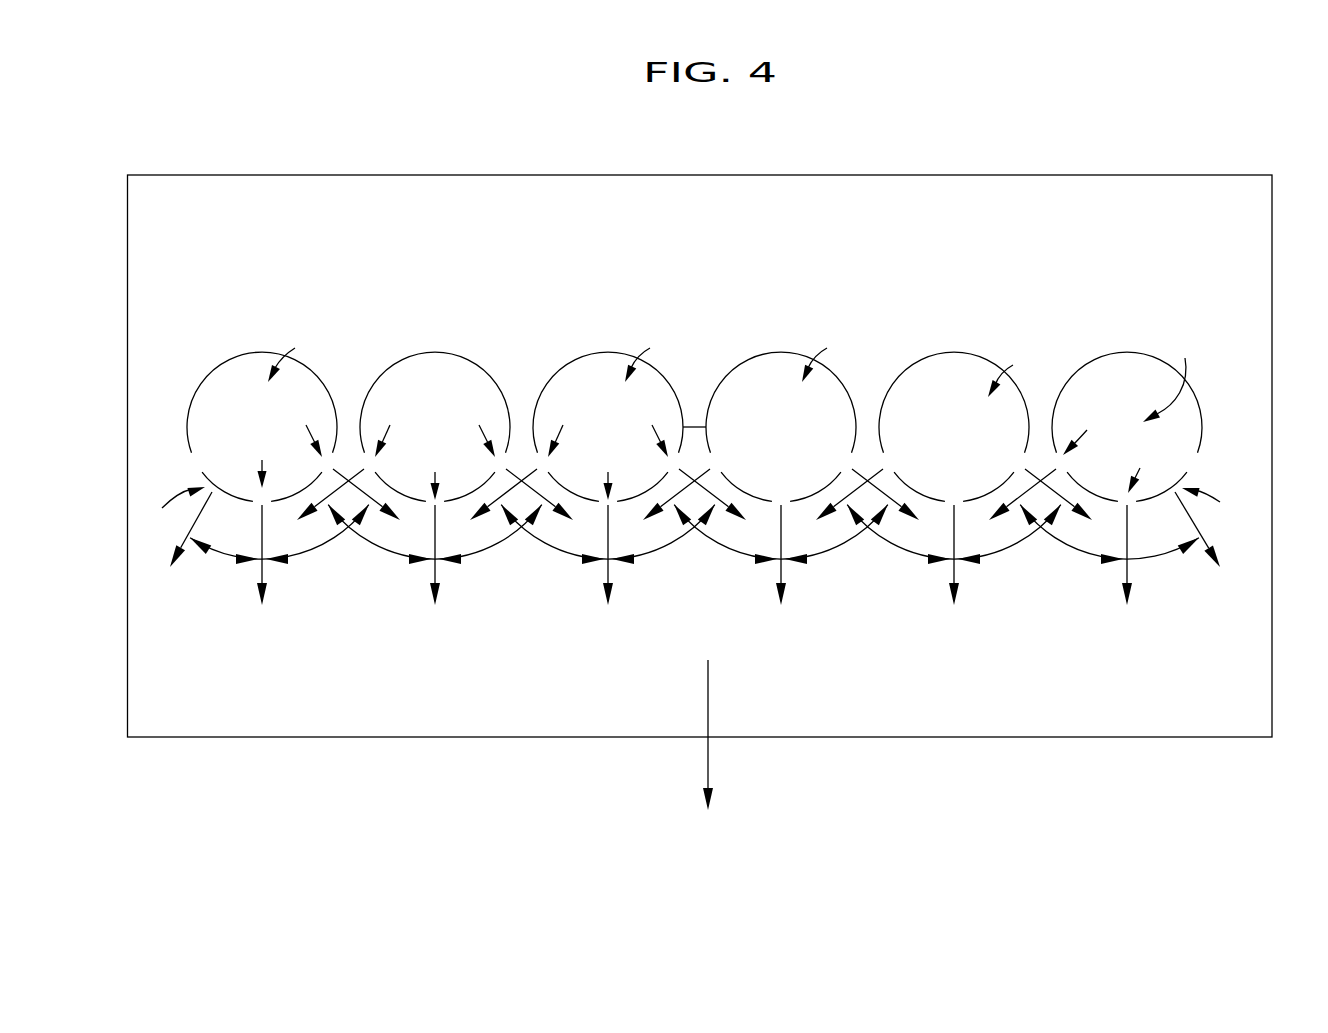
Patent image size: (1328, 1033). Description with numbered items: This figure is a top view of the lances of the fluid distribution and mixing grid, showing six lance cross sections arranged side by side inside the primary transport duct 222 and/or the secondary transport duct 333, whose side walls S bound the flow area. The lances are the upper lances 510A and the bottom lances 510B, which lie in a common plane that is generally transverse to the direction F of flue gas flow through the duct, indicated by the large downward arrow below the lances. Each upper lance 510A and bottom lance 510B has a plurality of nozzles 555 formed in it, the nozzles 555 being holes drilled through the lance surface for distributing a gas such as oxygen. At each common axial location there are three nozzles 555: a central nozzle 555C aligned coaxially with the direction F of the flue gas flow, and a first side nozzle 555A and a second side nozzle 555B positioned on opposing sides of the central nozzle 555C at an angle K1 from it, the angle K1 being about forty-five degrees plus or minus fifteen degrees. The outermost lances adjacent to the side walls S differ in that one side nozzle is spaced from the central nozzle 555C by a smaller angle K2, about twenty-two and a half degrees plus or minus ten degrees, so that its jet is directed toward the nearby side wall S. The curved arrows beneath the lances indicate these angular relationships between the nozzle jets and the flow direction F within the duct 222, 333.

The upper lance 510A is at (685, 394).
The bottom lance 510B is at (237, 353).
The nozzle 555 is at (702, 434).
The first side nozzle 555A is at (485, 426).
The second side nozzle 555B is at (470, 426).
The central nozzle 555C is at (711, 464).
The angle K1 is at (1078, 584).
The angle K2 is at (1177, 585).
The side wall S is at (704, 492).
The direction of flow F is at (708, 688).
The primary transport duct 222 is at (700, 492).
The secondary transport duct 333 is at (1115, 737).